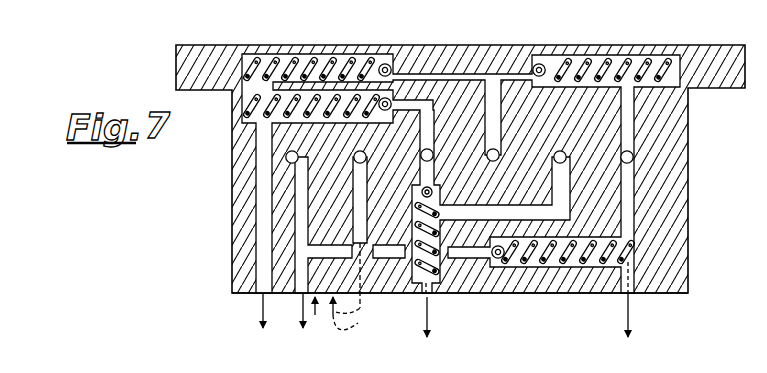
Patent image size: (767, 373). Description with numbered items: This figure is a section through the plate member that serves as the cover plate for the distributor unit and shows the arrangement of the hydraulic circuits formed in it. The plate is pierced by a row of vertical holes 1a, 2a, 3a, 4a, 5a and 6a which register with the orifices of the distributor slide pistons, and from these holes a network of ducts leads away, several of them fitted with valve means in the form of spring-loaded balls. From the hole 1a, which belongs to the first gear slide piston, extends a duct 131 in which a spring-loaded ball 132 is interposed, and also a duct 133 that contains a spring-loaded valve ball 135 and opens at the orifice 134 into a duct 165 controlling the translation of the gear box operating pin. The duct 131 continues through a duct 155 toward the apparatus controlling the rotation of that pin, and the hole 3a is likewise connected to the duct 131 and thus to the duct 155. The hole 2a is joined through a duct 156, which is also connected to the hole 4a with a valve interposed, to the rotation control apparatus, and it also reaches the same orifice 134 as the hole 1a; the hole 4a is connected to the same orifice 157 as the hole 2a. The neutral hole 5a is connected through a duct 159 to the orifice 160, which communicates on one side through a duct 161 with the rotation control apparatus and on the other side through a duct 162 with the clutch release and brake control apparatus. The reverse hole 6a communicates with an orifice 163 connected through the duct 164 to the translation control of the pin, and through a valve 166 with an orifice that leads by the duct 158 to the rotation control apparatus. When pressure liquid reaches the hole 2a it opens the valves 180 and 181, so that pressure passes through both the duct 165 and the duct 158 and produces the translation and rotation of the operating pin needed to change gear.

The duct 133 is at (446, 115).
The orifice 134 is at (263, 224).
The spring-loaded valve ball 135 is at (430, 121).
The valve 181 is at (386, 63).
The valve 180 is at (540, 63).
The valve 166 is at (499, 259).
The duct 131 is at (432, 285).
The spring-loaded ball 132 is at (433, 191).
The duct 156 is at (634, 113).
The vertical hole 6a is at (286, 157).
The vertical hole 5a is at (366, 156).
The vertical hole 1a is at (433, 155).
The vertical hole 2a is at (499, 156).
The vertical hole 3a is at (566, 157).
The vertical hole 4a is at (634, 157).
The duct 159 is at (365, 190).
The duct 162 is at (358, 308).
The orifice 163 is at (302, 277).
The duct 165 is at (259, 320).
The duct 164 is at (286, 310).
The duct 161 is at (315, 315).
The orifice 160 is at (411, 300).
The duct 155 is at (429, 318).
The orifice 157 is at (622, 297).
The duct 158 is at (636, 327).